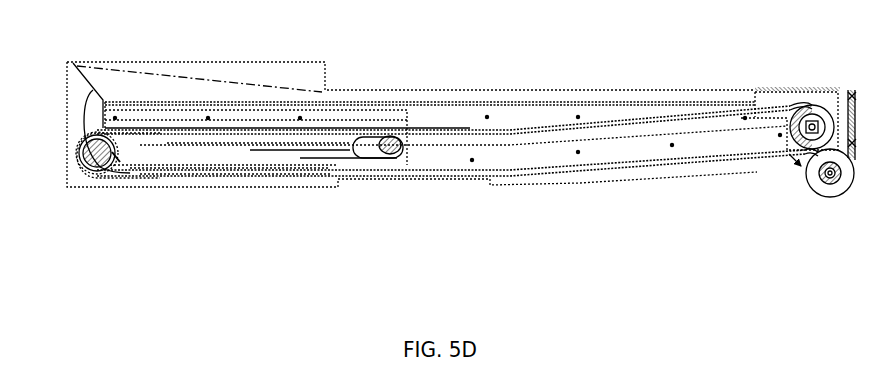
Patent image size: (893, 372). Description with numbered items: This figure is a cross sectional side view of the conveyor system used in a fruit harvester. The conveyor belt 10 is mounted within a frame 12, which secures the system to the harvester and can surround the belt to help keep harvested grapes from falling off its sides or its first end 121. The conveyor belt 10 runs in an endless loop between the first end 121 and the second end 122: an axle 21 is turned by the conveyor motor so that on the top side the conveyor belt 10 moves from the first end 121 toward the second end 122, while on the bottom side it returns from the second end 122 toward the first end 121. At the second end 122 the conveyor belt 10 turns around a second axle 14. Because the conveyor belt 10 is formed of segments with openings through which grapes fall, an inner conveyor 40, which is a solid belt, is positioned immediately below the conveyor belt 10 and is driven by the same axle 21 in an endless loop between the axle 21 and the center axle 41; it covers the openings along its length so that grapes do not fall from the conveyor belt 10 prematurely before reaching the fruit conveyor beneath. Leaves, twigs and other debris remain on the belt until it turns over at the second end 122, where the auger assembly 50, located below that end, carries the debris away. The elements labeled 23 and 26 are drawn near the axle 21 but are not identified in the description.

The conveyor belt 10 is at (452, 133).
The frame 12 is at (300, 75).
The second axle 14 is at (813, 120).
The first end 121 is at (85, 125).
The second end 122 is at (852, 96).
The axle 21 is at (100, 160).
The roller shaft 23 is at (113, 158).
The conveyor belt 26 is at (118, 150).
The inner conveyor 40 is at (267, 160).
The center axle 41 is at (400, 148).
The auger assembly 50 is at (795, 196).